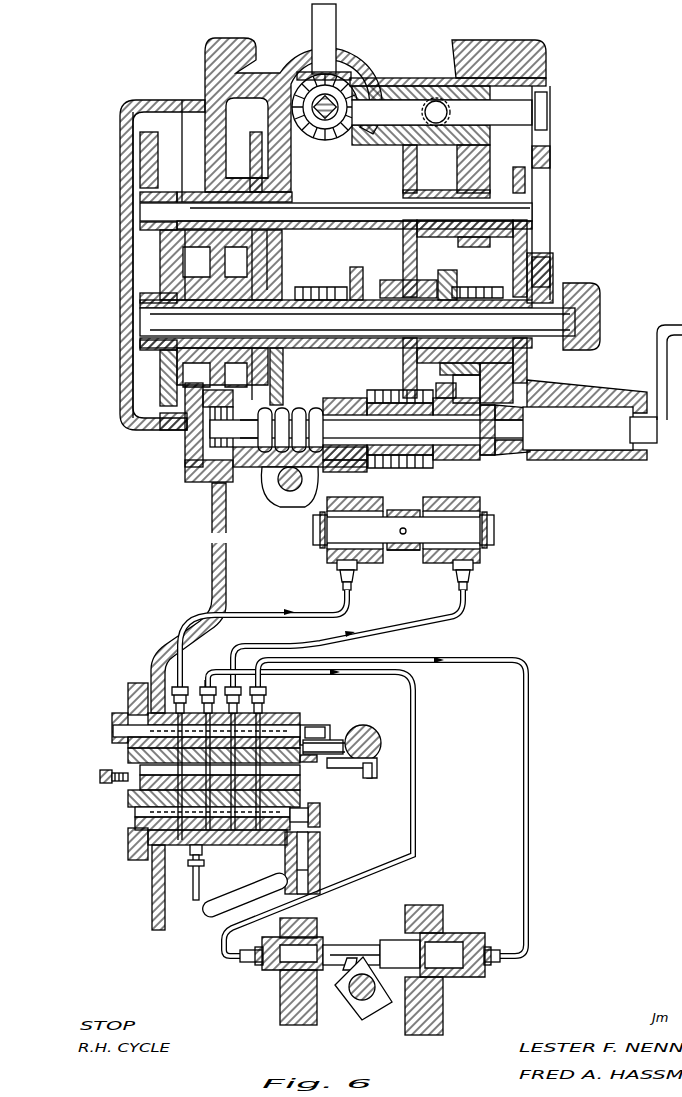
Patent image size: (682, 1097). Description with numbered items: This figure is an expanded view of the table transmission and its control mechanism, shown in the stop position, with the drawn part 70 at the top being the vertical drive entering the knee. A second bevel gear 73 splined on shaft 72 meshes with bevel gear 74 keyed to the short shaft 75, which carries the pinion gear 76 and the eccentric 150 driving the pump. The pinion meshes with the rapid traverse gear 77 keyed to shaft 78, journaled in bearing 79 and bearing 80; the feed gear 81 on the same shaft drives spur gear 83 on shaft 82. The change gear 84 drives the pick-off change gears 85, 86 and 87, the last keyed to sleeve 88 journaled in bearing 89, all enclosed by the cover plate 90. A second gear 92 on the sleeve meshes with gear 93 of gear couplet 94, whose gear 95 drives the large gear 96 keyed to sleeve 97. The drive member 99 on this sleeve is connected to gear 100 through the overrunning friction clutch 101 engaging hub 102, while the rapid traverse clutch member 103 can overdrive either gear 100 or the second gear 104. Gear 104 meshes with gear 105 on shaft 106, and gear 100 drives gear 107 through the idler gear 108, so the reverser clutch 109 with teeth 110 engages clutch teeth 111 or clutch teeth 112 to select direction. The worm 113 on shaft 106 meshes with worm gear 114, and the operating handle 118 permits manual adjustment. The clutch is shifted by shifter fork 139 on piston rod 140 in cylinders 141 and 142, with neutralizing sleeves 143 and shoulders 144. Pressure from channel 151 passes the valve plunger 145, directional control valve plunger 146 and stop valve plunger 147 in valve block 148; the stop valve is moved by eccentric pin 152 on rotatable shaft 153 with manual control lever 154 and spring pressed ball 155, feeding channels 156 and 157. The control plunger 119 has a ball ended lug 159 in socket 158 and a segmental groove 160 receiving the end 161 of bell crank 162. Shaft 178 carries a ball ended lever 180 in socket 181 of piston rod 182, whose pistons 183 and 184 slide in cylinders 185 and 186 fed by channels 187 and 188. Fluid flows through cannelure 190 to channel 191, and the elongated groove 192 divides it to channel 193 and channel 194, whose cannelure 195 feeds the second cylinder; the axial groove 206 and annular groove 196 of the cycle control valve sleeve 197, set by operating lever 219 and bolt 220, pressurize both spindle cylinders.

The drive shaft 70 is at (333, 76).
The shaft 72 is at (333, 103).
The second bevel gear 73 is at (297, 152).
The bevel gear 74 is at (385, 105).
The short shaft 75 is at (418, 90).
The pinion gear 76 is at (436, 125).
The rapid traverse gear 77 is at (404, 178).
The shaft 78 is at (322, 205).
The bearing 79 is at (490, 185).
The bearing 80 is at (203, 192).
The feed gear 81 is at (528, 186).
The shaft 82 is at (590, 292).
The spur gear 83 is at (552, 268).
The change gear 84 is at (130, 305).
The change gear 85 is at (133, 152).
The change gear 86 is at (165, 188).
The change gear 87 is at (160, 425).
The sleeve 88 is at (160, 377).
The bearing 89 is at (225, 365).
The cover plate 90 is at (125, 223).
The second gear 92 is at (265, 370).
The gear 93 is at (257, 135).
The gear couplet 94 is at (252, 160).
The gear 95 is at (280, 244).
The large gear 96 is at (283, 387).
The sleeve 97 is at (348, 290).
The drive member 99 is at (495, 285).
The gear 100 is at (455, 372).
The overrunning friction clutch 101 is at (492, 367).
The hub 102 is at (455, 287).
The rapid traverse clutch member 103 is at (425, 285).
The second gear 104 is at (355, 265).
The gear 105 is at (350, 478).
The shaft 106 is at (236, 470).
The gear 107 is at (460, 472).
The idler gear 108 is at (436, 385).
The reverser clutch 109 is at (390, 395).
The clutch teeth 110 is at (368, 460).
The clutch teeth 111 is at (463, 458).
The clutch teeth 112 is at (345, 468).
The worm 113 is at (242, 480).
The worm gear 114 is at (292, 507).
The operating handle 118 is at (655, 363).
The control plunger 119 is at (370, 730).
The shifter fork 139 is at (410, 560).
The piston rod 140 is at (405, 550).
The cylinder 141 is at (328, 560).
The cylinder 142 is at (480, 560).
The neutralizing sleeves 143 is at (360, 555).
The shoulders 144 is at (420, 555).
The valve plunger 145 is at (135, 730).
The directional control valve plunger 146 is at (128, 755).
The stop valve plunger 147 is at (140, 810).
The valve block 148 is at (128, 858).
The eccentric 150 is at (446, 130).
The channel 151 is at (200, 870).
The eccentric pin 152 is at (322, 818).
The rotatable shaft 153 is at (320, 836).
The manual control lever 154 is at (320, 880).
The spring pressed ball 155 is at (290, 870).
The channel 156 is at (268, 617).
The channel 157 is at (310, 638).
The socket 158 is at (365, 780).
The ball ended lug 159 is at (375, 762).
The segmental groove 160 is at (347, 730).
The end 161 is at (343, 725).
The bell crank 162 is at (320, 760).
The shaft 178 is at (360, 1000).
The ball ended lever 180 is at (345, 1010).
The socket 181 is at (348, 956).
The piston rod 182 is at (360, 945).
The piston 183 is at (393, 940).
The piston 184 is at (275, 970).
The cylinder 185 is at (278, 985).
The cylinder 186 is at (455, 933).
The channel 187 is at (415, 727).
The channel 188 is at (528, 707).
The cannelure 190 is at (128, 848).
The channel 191 is at (140, 825).
The elongated groove 192 is at (138, 797).
The channel 193 is at (137, 793).
The channel 194 is at (248, 770).
The cannelure 195 is at (275, 712).
The annular groove 196 is at (302, 728).
The cycle control valve sleeve 197 is at (128, 705).
The axial groove 206 is at (205, 675).
The operating lever 219 is at (100, 772).
The bolt 220 is at (105, 778).